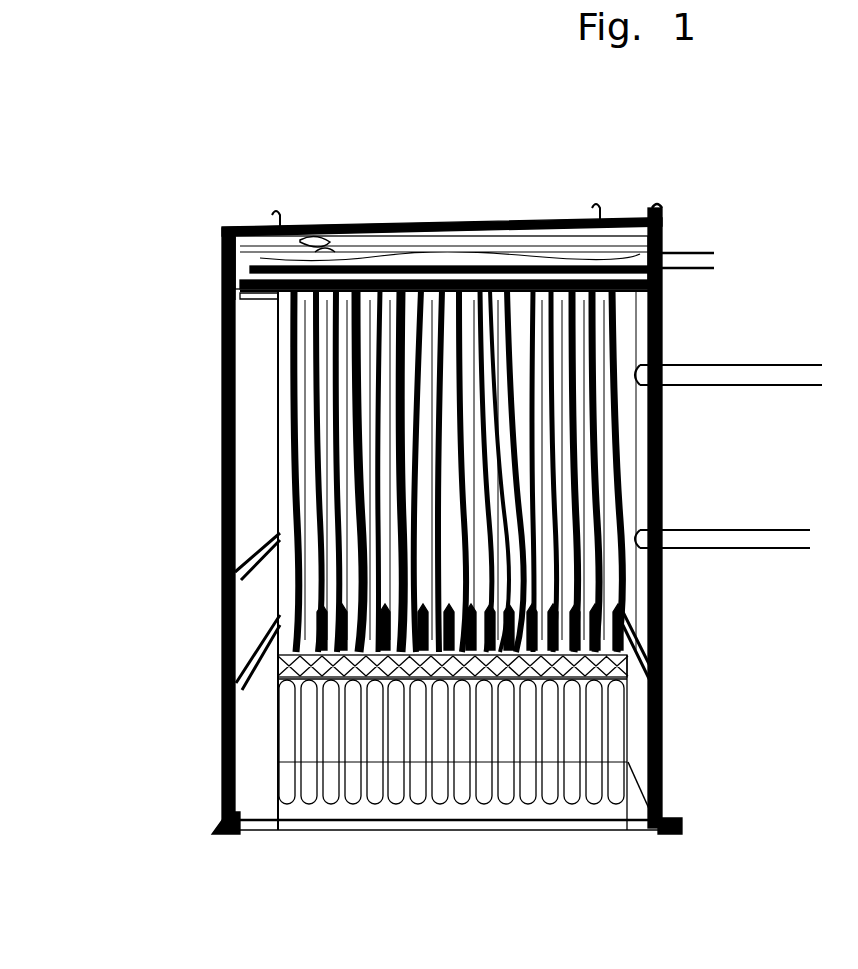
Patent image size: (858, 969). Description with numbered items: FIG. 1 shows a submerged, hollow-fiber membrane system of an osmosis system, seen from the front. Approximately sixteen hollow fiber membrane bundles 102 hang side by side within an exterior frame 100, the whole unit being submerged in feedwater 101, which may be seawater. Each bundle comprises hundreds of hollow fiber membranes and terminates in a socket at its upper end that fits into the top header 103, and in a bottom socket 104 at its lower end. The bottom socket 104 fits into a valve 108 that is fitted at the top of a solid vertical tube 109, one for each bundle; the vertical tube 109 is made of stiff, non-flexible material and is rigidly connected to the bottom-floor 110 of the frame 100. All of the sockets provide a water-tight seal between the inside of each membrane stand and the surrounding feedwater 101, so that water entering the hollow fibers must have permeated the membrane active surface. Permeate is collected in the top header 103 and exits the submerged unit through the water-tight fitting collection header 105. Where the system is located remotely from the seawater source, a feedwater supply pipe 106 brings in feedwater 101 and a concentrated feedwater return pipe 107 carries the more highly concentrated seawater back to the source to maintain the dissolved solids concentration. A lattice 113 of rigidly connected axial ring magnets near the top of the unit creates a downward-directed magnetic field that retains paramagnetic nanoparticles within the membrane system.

The exterior frame 100 is at (223, 228).
The feedwater 101 is at (266, 486).
The hollow fiber membrane bundles 102 is at (572, 436).
The top header 103 is at (400, 268).
The bottom socket 104 is at (282, 668).
The collection header fitting 105 is at (692, 236).
The feedwater supply pipe 106 is at (726, 557).
The concentrated feedwater return pipe 107 is at (730, 398).
The valve 108 is at (273, 673).
The vertical tube 109 is at (294, 742).
The bottom-floor 110 is at (265, 810).
The lattice 113 is at (272, 311).